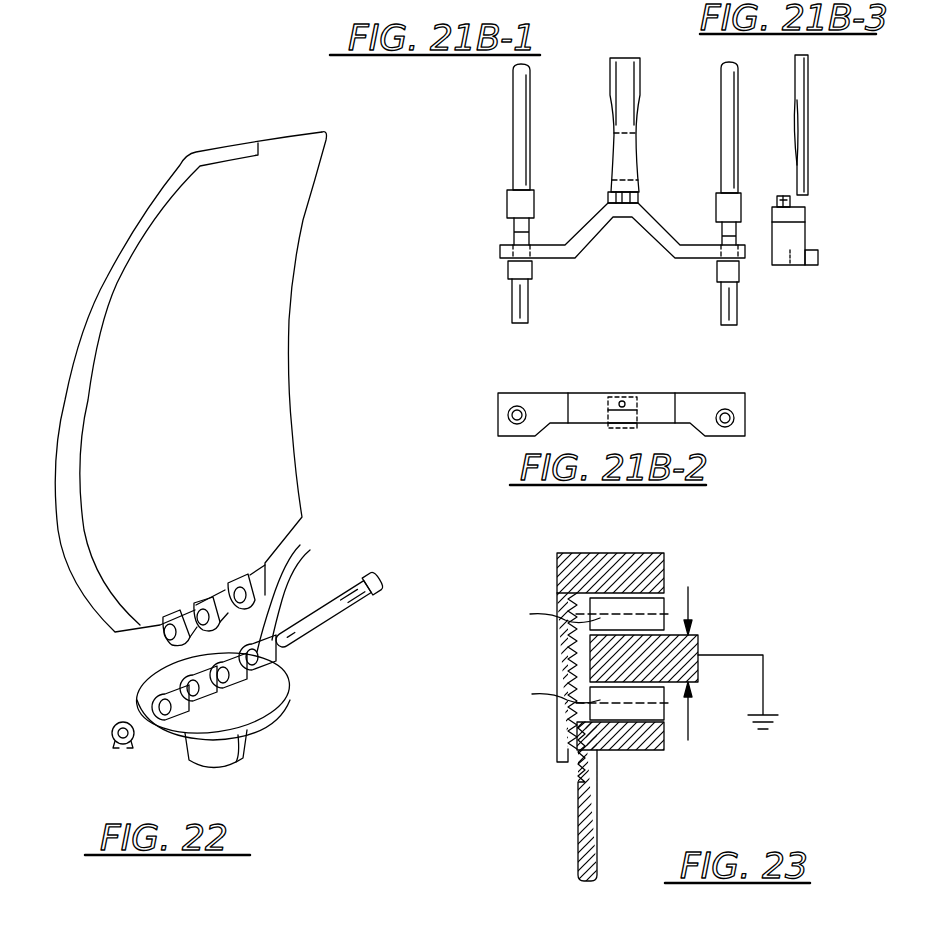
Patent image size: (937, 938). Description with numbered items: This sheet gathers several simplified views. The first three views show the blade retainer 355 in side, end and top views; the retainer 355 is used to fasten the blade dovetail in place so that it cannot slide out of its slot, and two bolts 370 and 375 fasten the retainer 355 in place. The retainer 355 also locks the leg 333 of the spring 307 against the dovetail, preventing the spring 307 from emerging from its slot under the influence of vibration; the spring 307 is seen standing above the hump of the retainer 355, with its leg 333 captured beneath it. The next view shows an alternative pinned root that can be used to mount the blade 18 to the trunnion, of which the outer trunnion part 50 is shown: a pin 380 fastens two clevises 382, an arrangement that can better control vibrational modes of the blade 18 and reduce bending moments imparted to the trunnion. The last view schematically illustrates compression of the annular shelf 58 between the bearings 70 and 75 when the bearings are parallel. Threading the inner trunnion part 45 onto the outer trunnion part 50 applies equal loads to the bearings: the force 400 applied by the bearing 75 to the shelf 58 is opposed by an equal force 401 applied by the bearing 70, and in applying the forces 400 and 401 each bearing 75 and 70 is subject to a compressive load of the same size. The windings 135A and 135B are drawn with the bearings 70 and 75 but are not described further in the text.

In FIG. 22, the blade 18 is at (206, 366).
In FIG. 23, the inner trunnion part 45 is at (592, 818).
In FIG. 22, the outer trunnion part 50 is at (310, 687).
In FIG. 23, the outer trunnion part 50 is at (655, 567).
In FIG. 23, the annular shelf 58 is at (690, 648).
In FIG. 23, the bearing 70 is at (655, 605).
In FIG. 23, the bearing 75 is at (630, 712).
In FIG. 23, the upper coil winding 135A is at (543, 617).
In FIG. 23, the lower coil winding 135B is at (543, 694).
In FIG. 21B-1, the spring 307 is at (628, 90).
In FIG. 21B-3, the spring 307 is at (806, 130).
In FIG. 21B-1, the leg 333 is at (640, 200).
In FIG. 21B-3, the leg 333 is at (778, 200).
In FIG. 21B-2, the leg 333 is at (628, 393).
In FIG. 21B-1, the blade retainer 355 is at (665, 240).
In FIG. 21B-3, the blade retainer 355 is at (797, 238).
In FIG. 21B-2, the blade retainer 355 is at (657, 401).
In FIG. 21B-1, the bolt 370 is at (530, 304).
In FIG. 21B-1, the bolt 375 is at (737, 304).
In FIG. 22, the pin 380 is at (336, 625).
In FIG. 22, the clevises 382 is at (300, 548).
In FIG. 23, the force 400 is at (688, 722).
In FIG. 23, the force 401 is at (690, 600).